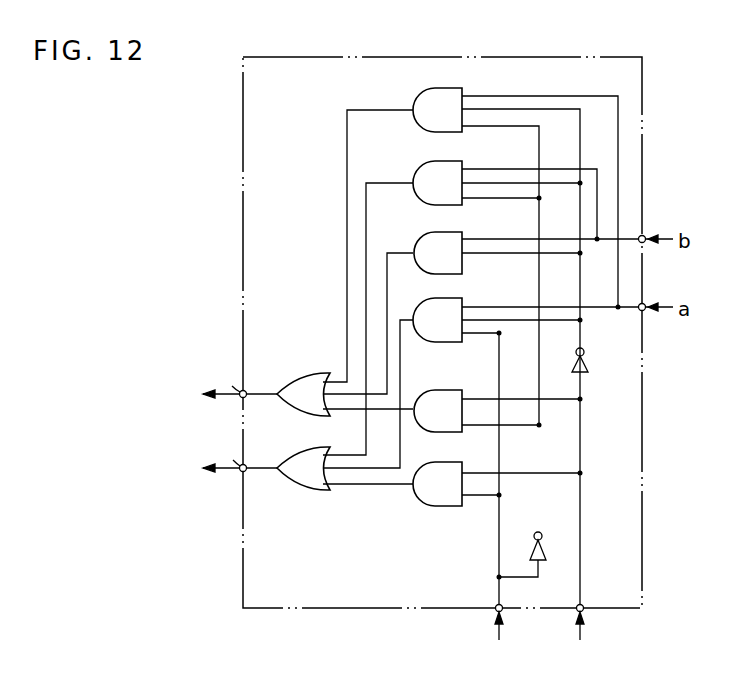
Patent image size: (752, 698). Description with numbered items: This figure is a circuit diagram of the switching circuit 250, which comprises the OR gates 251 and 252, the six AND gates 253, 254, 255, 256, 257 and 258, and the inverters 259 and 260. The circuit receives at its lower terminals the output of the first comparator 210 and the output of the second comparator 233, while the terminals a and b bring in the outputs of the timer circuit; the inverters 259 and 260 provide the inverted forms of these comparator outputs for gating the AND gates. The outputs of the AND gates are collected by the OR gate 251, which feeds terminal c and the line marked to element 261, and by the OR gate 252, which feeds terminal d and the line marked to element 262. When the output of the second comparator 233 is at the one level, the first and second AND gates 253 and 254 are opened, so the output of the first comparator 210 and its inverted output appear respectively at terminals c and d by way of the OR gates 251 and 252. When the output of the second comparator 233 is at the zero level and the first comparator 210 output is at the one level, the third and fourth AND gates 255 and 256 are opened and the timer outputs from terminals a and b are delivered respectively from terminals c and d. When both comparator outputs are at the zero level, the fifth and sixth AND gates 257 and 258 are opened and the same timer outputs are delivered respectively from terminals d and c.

The switching circuit 250 is at (529, 57).
The OR gate 251 is at (293, 491).
The OR gate 252 is at (286, 378).
The first AND gate 253 is at (426, 506).
The second AND gate 254 is at (432, 390).
The third AND gate 255 is at (449, 298).
The fourth AND gate 256 is at (455, 233).
The fifth AND gate 257 is at (455, 162).
The sixth AND gate 258 is at (455, 89).
The inverter 259 is at (549, 555).
The inverter 260 is at (588, 362).
The first comparator 210 is at (487, 650).
The second comparator 233 is at (574, 650).
The output to element 261 is at (193, 464).
The output to element 262 is at (193, 391).